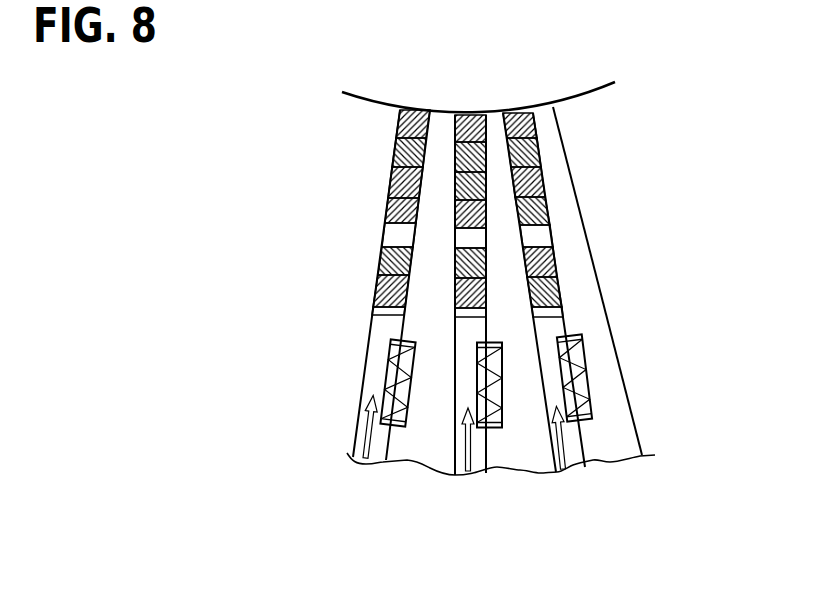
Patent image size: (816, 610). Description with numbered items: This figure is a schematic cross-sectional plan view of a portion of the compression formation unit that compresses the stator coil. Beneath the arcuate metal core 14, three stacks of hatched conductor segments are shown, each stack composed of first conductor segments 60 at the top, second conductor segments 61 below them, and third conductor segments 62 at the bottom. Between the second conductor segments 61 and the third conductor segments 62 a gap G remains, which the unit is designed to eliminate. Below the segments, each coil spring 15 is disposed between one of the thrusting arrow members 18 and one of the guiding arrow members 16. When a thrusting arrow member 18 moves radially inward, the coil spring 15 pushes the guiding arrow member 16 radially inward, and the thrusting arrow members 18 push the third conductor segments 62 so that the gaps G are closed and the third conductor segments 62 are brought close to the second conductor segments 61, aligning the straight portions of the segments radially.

The metal core 14 is at (599, 87).
The coil spring 15 is at (587, 385).
The guiding arrow member 16 is at (592, 303).
The thrusting arrow member 18 is at (567, 447).
The first conductor segments 60 is at (398, 143).
The second conductor segments 61 is at (388, 200).
The third conductor segments 62 is at (378, 283).
The gap G is at (542, 235).